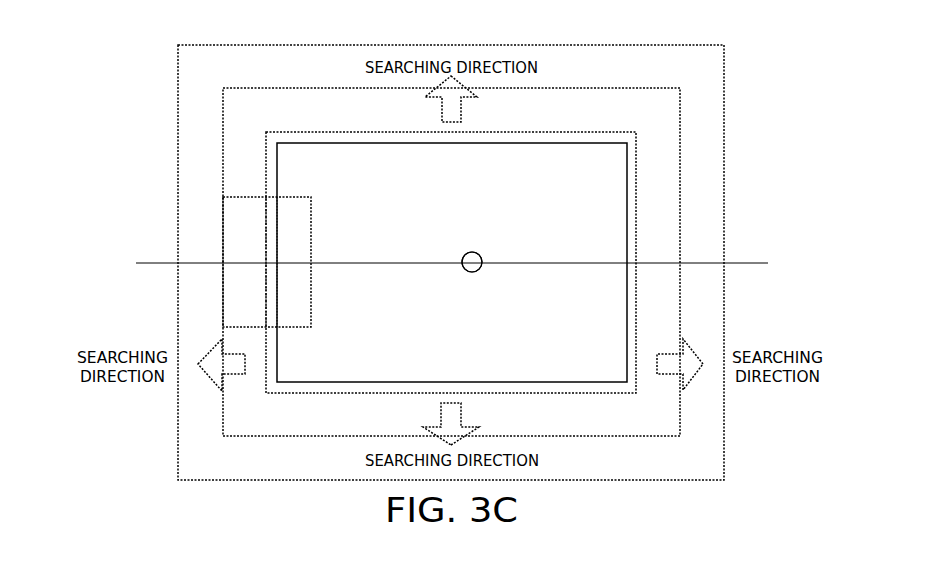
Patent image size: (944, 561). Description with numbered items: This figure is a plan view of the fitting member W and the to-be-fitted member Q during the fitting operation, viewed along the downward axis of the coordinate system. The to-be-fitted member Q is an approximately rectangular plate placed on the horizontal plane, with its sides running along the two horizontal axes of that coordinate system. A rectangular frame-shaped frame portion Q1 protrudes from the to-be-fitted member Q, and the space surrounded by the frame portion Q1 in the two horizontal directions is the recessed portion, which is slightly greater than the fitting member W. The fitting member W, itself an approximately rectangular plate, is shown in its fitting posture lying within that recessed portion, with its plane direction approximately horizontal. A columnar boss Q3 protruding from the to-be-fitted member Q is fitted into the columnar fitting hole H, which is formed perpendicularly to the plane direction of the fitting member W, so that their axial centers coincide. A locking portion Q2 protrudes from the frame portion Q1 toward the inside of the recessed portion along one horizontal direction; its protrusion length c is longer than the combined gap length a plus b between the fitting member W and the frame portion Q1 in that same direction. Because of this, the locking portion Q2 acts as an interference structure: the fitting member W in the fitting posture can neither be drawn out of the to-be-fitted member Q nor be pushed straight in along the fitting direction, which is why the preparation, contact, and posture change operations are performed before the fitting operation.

The fitting member W is at (528, 132).
The to-be-fitted member Q is at (481, 262).
The frame portion Q1 is at (672, 88).
The locking portion Q2 is at (245, 198).
The boss Q3 is at (509, 277).
The fitting hole H is at (509, 241).
The gap length a is at (288, 160).
The gap length b is at (647, 160).
The protrusion length c is at (310, 217).